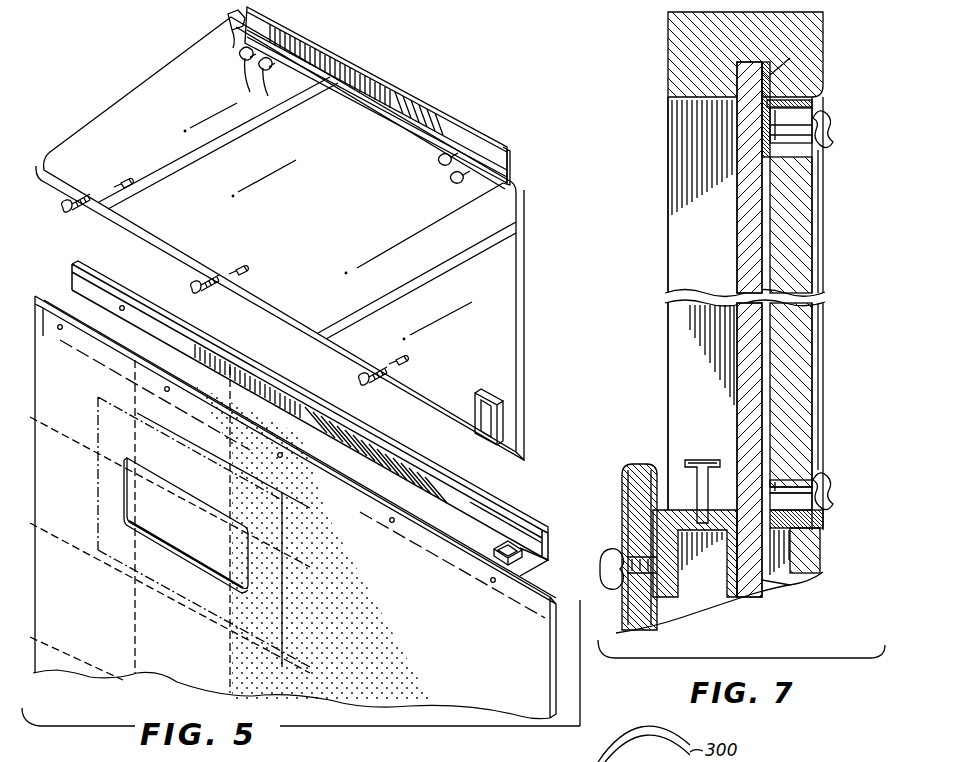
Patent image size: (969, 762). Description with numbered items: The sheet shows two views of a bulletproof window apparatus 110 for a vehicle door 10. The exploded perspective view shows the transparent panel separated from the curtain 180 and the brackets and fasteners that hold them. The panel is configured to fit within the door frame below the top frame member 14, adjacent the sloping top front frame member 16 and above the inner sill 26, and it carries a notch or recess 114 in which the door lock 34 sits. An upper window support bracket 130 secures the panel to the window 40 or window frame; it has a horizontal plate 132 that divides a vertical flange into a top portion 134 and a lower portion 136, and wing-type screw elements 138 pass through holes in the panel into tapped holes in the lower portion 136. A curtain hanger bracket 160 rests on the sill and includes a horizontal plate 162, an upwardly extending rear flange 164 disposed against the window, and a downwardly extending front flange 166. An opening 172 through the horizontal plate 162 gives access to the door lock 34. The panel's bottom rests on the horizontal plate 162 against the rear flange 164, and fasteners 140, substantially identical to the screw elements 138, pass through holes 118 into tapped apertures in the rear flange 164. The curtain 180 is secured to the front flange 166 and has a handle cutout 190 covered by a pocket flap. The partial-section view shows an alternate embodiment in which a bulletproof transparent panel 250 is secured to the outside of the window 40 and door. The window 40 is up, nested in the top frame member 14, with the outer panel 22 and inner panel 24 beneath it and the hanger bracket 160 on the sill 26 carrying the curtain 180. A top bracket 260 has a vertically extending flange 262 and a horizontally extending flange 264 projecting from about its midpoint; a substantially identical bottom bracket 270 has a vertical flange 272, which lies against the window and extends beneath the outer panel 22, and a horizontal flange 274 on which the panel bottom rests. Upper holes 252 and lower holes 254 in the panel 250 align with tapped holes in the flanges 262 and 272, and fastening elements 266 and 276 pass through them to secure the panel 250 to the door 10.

In FIG. 5, the apparatus 110 is at (113, 97).
In FIG. 5, the upper window support bracket 130 is at (443, 100).
In FIG. 5, the horizontal plate 132 is at (228, 20).
In FIG. 5, the top portion of vertical flange 134 is at (497, 148).
In FIG. 5, the lower portion of vertical flange 136 is at (436, 140).
In FIG. 5, the screw elements 138 is at (263, 72).
In FIG. 5, the holes 118 is at (124, 178).
In FIG. 5, the fasteners 140 is at (203, 298).
In FIG. 5, the curtain hanger bracket 160 is at (293, 490).
In FIG. 7, the curtain hanger bracket 160 is at (629, 560).
In FIG. 5, the rear plate or flange 164 is at (290, 398).
In FIG. 5, the front plate or flange 166 is at (377, 512).
In FIG. 5, the horizontal plate 162 is at (462, 492).
In FIG. 5, the opening 172 is at (515, 538).
In FIG. 5, the handle cutout 190 is at (188, 548).
In FIG. 5, the notch or recess 114 is at (490, 420).
In FIG. 7, the top frame member 14 is at (680, 27).
In FIG. 7, the door 10 is at (658, 82).
In FIG. 7, the top front frame member 16 is at (668, 240).
In FIG. 7, the window 40 is at (737, 234).
In FIG. 7, the top bracket 260 is at (772, 72).
In FIG. 7, the vertically extending flange 262 is at (775, 90).
In FIG. 7, the horizontally extending flange 264 is at (790, 100).
In FIG. 7, the fastening elements 266 is at (825, 115).
In FIG. 7, the upper holes or apertures 252 is at (790, 142).
In FIG. 7, the bulletproof transparent panel 250 is at (820, 250).
In FIG. 7, the door lock 34 is at (712, 468).
In FIG. 7, the inner sill 26 is at (668, 522).
In FIG. 7, the curtain 180 is at (640, 630).
In FIG. 7, the inner panel 24 is at (672, 622).
In FIG. 7, the lower apertures or holes 254 is at (795, 480).
In FIG. 7, the vertical flange 272 is at (775, 480).
In FIG. 7, the fastening elements 276 is at (828, 488).
In FIG. 7, the horizontal flange 274 is at (823, 515).
In FIG. 7, the outer panel 22 is at (822, 558).
In FIG. 7, the bottom bracket 270 is at (787, 586).